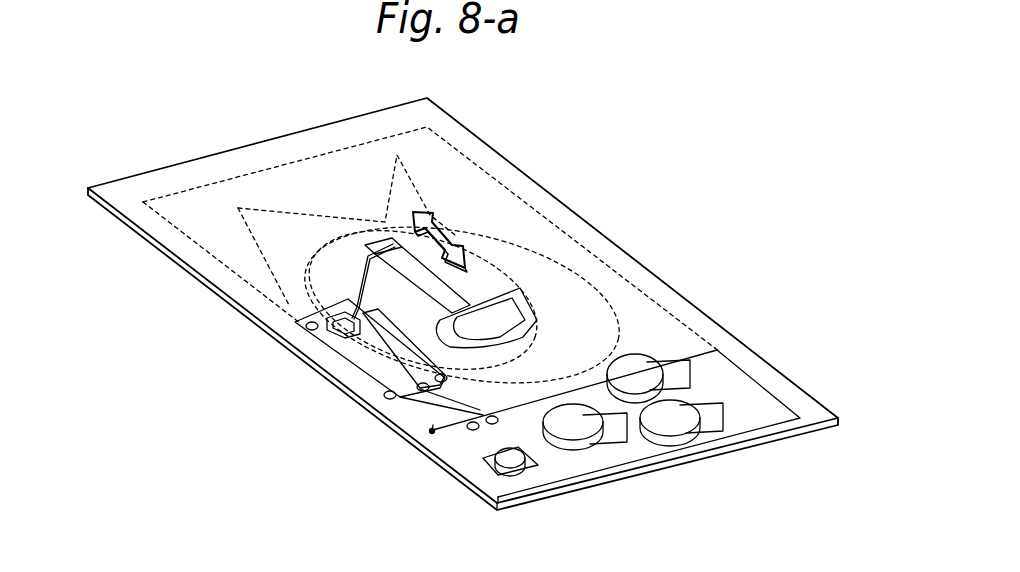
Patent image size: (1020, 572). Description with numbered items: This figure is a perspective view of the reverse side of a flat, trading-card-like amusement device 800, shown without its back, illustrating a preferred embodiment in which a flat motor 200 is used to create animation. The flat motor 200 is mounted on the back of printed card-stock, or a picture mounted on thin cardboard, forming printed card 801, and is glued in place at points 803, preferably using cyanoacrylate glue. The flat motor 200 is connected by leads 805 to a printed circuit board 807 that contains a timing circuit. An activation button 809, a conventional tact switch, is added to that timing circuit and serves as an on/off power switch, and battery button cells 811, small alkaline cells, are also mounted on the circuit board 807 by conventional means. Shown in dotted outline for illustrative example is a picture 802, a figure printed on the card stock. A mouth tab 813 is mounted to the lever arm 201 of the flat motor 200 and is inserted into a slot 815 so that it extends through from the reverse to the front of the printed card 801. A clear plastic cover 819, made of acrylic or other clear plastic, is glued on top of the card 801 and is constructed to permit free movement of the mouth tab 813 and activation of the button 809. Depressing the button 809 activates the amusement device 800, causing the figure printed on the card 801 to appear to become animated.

The amusement device 800 is at (436, 299).
The printed card 801 is at (168, 180).
The picture 802 is at (425, 192).
The mouth tab 813 is at (440, 278).
The slot 815 is at (550, 340).
The lever arm 201 is at (366, 276).
The flat motor 200 is at (297, 317).
The glue points 803 is at (383, 397).
The leads 805 is at (465, 388).
The printed circuit board 807 is at (431, 433).
The activation button 809 is at (484, 466).
The battery button cells 811 is at (620, 382).
The clear plastic cover 819 is at (702, 476).